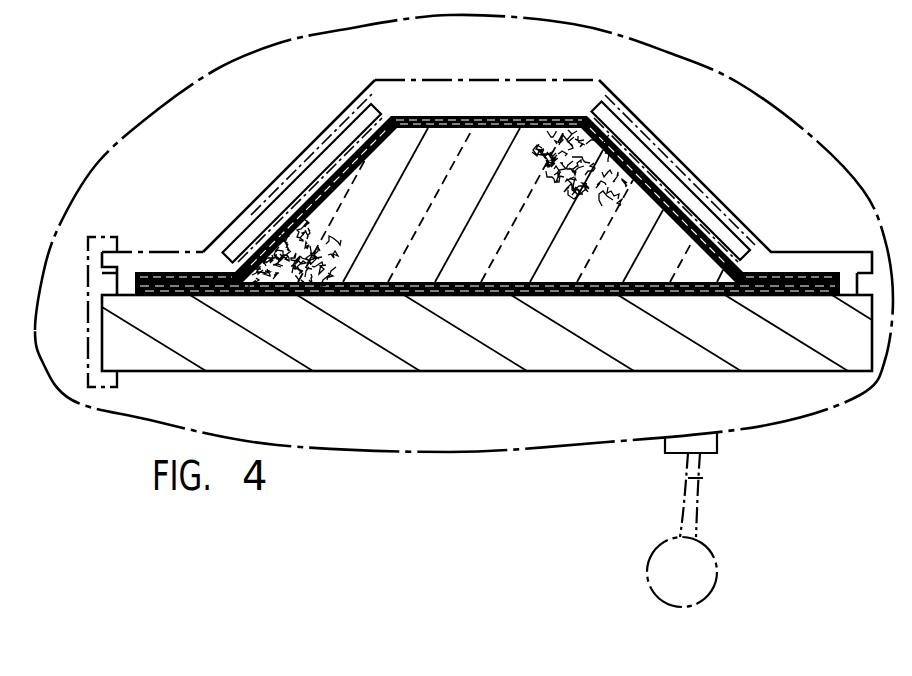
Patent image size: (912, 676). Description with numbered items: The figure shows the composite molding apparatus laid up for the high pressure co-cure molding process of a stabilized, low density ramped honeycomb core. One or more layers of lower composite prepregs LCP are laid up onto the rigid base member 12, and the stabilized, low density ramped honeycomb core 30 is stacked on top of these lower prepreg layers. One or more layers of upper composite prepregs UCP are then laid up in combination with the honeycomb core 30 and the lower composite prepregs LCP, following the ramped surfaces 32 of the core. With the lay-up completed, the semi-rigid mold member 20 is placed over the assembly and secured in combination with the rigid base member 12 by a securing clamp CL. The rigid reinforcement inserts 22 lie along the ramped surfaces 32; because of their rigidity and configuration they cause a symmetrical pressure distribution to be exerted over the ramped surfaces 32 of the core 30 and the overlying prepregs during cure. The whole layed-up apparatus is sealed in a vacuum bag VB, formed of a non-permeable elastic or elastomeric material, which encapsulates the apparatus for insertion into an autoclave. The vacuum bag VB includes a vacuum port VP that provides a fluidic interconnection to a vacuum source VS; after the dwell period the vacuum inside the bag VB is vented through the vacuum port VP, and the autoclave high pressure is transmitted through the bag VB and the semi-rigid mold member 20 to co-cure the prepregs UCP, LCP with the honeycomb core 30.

The rigid base member 12 is at (470, 353).
The semi-rigid mold member 20 is at (527, 78).
The rigid reinforcement inserts 22 is at (313, 156).
The stabilized, low density ramped honeycomb core 30 is at (474, 208).
The ramped surfaces 32 is at (327, 197).
The upper composite prepregs UCP is at (648, 176).
The lower composite prepregs LCP is at (797, 273).
The securing clamp CL is at (90, 262).
The vacuum bag VB is at (463, 453).
The vacuum port VP is at (718, 446).
The vacuum source VS is at (682, 530).